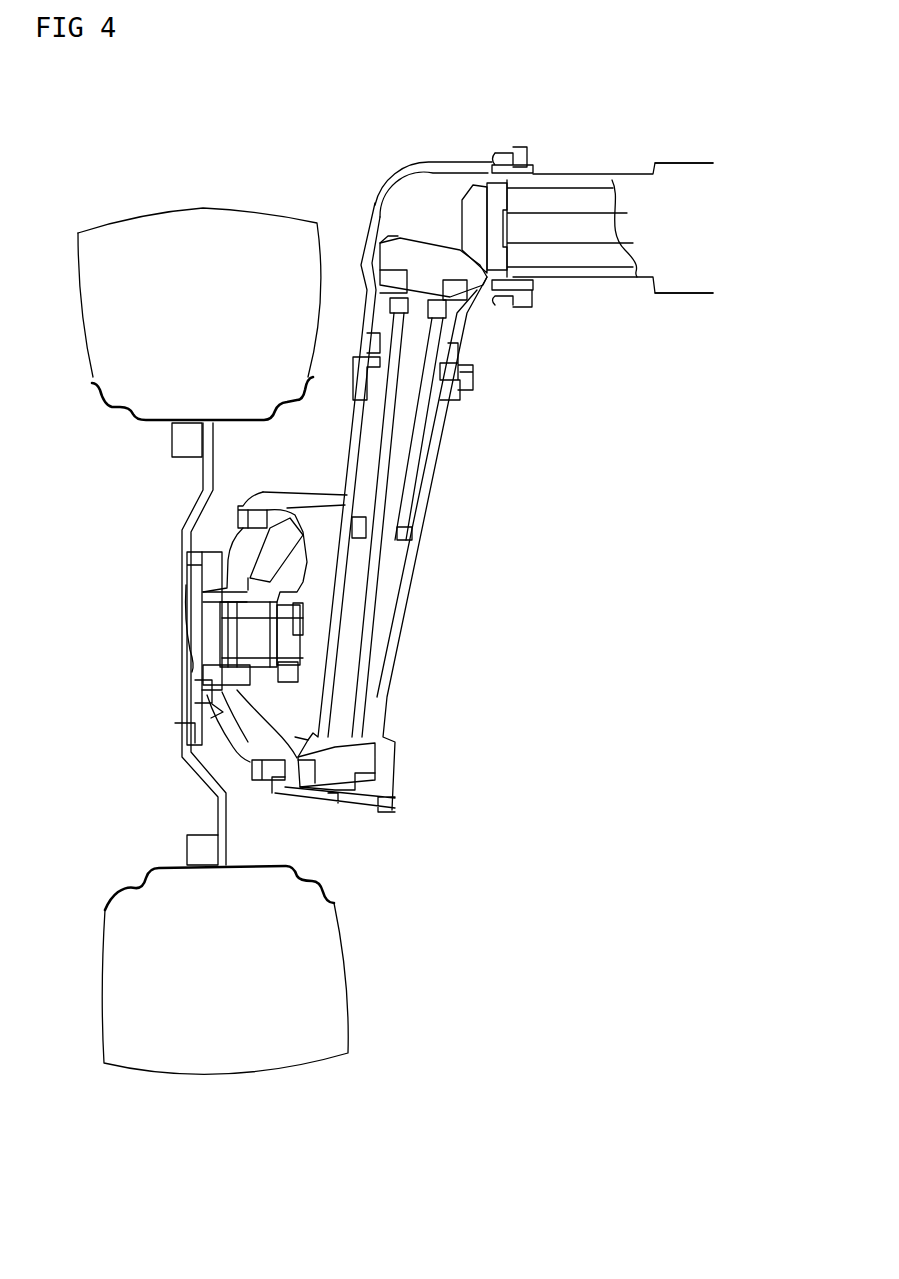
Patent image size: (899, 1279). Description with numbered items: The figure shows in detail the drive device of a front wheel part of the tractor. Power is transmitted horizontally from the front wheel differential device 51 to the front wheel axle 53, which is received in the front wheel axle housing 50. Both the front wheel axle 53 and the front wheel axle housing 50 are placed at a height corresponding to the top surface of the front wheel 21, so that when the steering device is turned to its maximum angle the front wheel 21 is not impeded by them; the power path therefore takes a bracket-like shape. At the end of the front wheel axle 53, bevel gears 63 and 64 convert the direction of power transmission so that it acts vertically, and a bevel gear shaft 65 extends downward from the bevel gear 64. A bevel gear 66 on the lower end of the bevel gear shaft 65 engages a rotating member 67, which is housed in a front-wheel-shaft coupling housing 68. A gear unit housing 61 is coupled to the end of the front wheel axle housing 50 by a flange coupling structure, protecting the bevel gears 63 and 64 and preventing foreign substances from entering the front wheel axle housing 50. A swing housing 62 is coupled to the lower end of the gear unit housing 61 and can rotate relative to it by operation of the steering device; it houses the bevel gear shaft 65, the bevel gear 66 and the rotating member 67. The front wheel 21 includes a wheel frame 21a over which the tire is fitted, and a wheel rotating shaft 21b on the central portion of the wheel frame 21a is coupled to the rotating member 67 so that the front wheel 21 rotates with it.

The front wheel 21 is at (203, 217).
The wheel frame 21a is at (192, 511).
The wheel rotating shaft 21b is at (212, 650).
The front wheel axle housing 50 is at (625, 180).
The front wheel differential device 51 is at (680, 163).
The front wheel axle 53 is at (577, 232).
The gear unit housing 61 is at (413, 170).
The swing housing 62 is at (392, 640).
The bevel gear 63 is at (466, 200).
The bevel gear 64 is at (428, 247).
The bevel gear shaft 65 is at (392, 465).
The bevel gear 66 is at (348, 762).
The rotating member 67 is at (272, 723).
The front-wheel-shaft coupling housing 68 is at (222, 712).